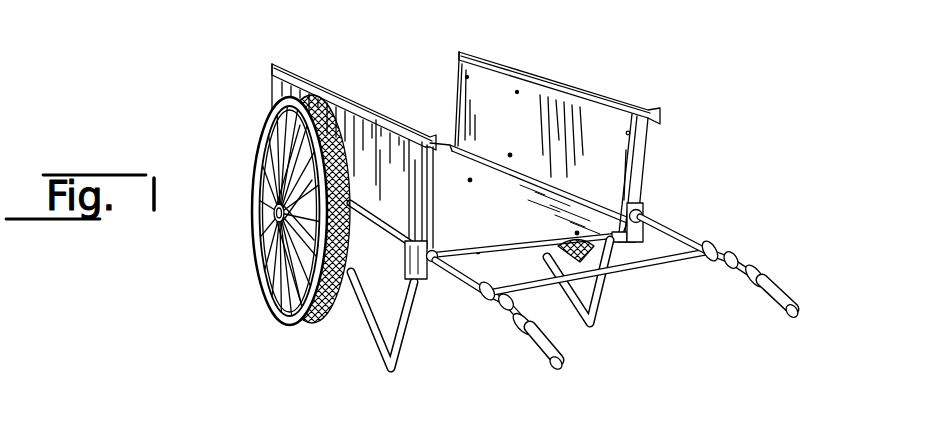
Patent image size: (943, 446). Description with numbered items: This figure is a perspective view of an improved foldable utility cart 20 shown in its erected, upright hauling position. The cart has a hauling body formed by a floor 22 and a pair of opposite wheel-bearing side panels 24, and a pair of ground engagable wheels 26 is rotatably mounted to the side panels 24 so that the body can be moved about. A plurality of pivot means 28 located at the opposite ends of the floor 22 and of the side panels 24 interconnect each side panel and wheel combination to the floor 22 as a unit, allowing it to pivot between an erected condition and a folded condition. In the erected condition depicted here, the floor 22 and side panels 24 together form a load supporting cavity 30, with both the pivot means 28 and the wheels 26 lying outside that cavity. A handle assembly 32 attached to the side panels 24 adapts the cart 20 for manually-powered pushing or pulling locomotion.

The foldable utility cart 20 is at (661, 77).
The floor 22 is at (500, 238).
The wheel-bearing side panels 24 is at (369, 118).
The ground engagable wheels 26 is at (259, 260).
The pivot means 28 is at (644, 212).
The load supporting cavity 30 is at (647, 158).
The handle assembly 32 is at (687, 262).